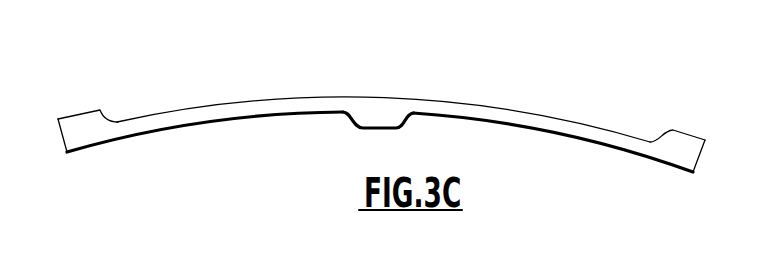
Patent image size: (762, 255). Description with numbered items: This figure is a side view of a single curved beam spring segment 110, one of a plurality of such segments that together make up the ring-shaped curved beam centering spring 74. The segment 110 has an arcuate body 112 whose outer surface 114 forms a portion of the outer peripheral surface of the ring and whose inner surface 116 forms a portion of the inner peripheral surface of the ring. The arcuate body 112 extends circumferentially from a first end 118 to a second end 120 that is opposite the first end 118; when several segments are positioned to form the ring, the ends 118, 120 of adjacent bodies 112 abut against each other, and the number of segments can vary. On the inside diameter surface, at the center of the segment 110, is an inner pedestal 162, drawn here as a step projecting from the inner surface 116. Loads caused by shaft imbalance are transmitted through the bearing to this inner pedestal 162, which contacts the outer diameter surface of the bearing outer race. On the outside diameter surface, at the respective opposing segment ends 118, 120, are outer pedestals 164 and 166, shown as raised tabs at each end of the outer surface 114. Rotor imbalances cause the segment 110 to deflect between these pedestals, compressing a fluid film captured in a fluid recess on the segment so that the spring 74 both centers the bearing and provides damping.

The curved beam centering spring 74 is at (11, 28).
The curved beam spring segment 110 is at (381, 100).
The arcuate body 112 is at (381, 129).
The outer surface 114 is at (248, 100).
The inner surface 116 is at (279, 117).
The first end 118 is at (63, 141).
The second end 120 is at (703, 157).
The inner pedestal 162 is at (388, 130).
The outer pedestal 164 is at (97, 123).
The outer pedestal 166 is at (681, 138).